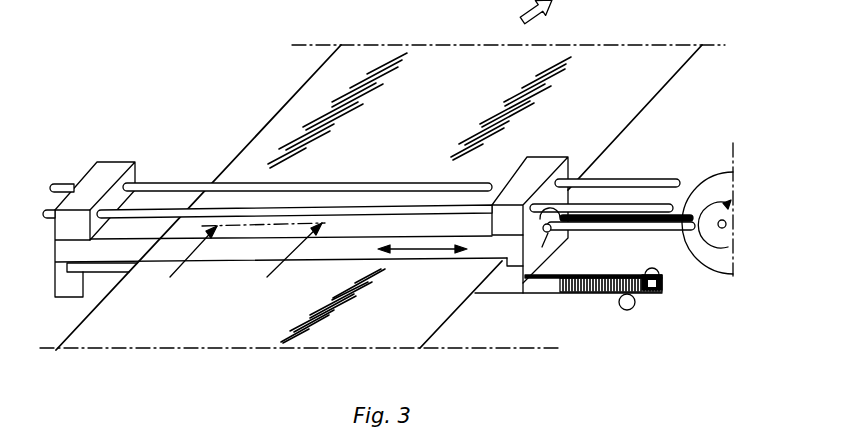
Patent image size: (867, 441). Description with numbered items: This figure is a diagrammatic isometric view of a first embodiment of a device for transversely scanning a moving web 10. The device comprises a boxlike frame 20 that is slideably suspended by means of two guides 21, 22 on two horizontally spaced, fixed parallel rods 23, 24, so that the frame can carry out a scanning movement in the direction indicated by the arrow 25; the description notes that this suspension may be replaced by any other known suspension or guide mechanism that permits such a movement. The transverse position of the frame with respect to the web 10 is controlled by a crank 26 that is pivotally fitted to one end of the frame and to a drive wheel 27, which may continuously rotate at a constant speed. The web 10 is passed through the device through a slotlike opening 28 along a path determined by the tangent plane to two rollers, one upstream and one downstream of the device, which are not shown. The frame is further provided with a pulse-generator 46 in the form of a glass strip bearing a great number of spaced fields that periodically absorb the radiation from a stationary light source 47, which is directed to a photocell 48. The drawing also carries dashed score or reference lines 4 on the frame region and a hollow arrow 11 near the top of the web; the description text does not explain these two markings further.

The score lines 4 is at (247, 260).
The web 10 is at (185, 340).
The direction of sheet movement 11 is at (515, 17).
The boxlike frame 20 is at (510, 283).
The guide 21 is at (97, 182).
The guide 22 is at (553, 161).
The fixed parallel rod 23 is at (157, 212).
The fixed parallel rod 24 is at (201, 186).
The arrow 25 is at (424, 250).
The crank 26 is at (605, 227).
The drive wheel 27 is at (723, 173).
The slotlike opening 28 is at (92, 268).
The pulse-generator 46 is at (558, 291).
The stationary light source 47 is at (660, 267).
The photocell 48 is at (627, 310).